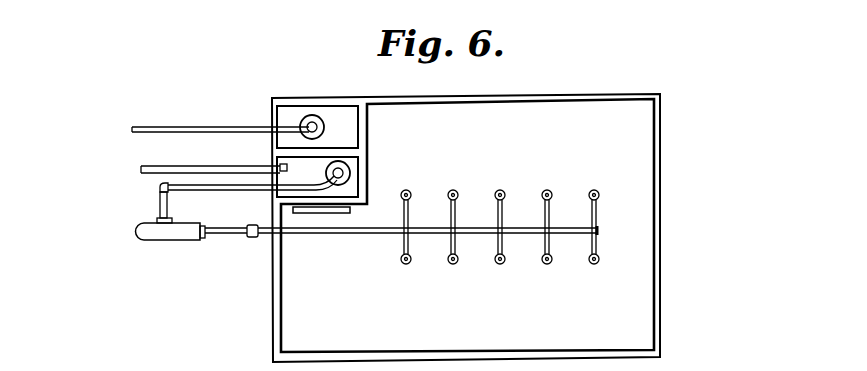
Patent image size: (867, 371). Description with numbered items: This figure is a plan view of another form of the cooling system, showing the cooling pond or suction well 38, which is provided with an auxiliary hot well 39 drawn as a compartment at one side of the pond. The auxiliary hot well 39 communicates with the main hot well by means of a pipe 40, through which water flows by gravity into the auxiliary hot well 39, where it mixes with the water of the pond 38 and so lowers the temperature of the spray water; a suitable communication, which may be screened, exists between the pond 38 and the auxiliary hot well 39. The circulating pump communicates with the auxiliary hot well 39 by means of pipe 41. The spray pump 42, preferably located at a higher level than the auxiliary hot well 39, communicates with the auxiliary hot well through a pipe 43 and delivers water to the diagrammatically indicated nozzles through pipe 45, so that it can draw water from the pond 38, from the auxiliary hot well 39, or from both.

The cooling pond 38 is at (630, 165).
The auxiliary hot well 39 is at (353, 167).
The pipe 40 is at (205, 167).
The pipe 41 is at (188, 127).
The spray pump 42 is at (170, 232).
The pipe 43 is at (225, 190).
The pipe 45 is at (238, 235).